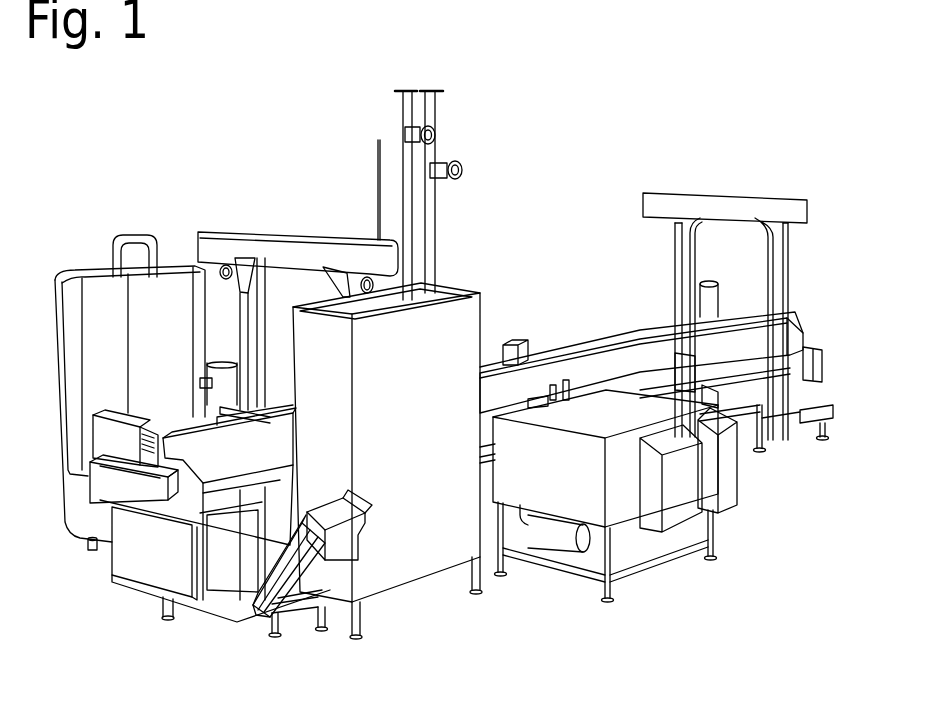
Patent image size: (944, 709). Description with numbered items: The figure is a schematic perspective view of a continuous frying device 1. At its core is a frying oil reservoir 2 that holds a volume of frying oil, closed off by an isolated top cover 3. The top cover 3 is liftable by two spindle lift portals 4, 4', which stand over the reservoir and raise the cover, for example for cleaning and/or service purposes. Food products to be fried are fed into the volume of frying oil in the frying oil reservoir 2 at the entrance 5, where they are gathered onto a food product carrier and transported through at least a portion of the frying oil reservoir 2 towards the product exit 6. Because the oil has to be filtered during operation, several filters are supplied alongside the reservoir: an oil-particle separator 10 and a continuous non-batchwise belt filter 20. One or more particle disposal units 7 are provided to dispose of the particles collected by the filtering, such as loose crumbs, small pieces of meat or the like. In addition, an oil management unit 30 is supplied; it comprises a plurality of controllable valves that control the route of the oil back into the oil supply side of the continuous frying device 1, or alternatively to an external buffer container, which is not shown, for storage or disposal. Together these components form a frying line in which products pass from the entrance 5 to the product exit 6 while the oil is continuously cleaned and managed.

The continuous frying device 1 is at (511, 227).
The frying oil reservoir 2 is at (747, 405).
The isolated top cover 3 is at (613, 367).
The spindle lift portal 4 is at (741, 316).
The spindle lift portal 4' is at (298, 275).
The entrance 5 is at (817, 360).
The product exit 6 is at (117, 495).
The particle disposal unit 7 is at (263, 590).
The oil-particle separator 10 is at (65, 327).
The continuous non-batchwise belt filter 20 is at (582, 478).
The oil management unit 30 is at (393, 502).